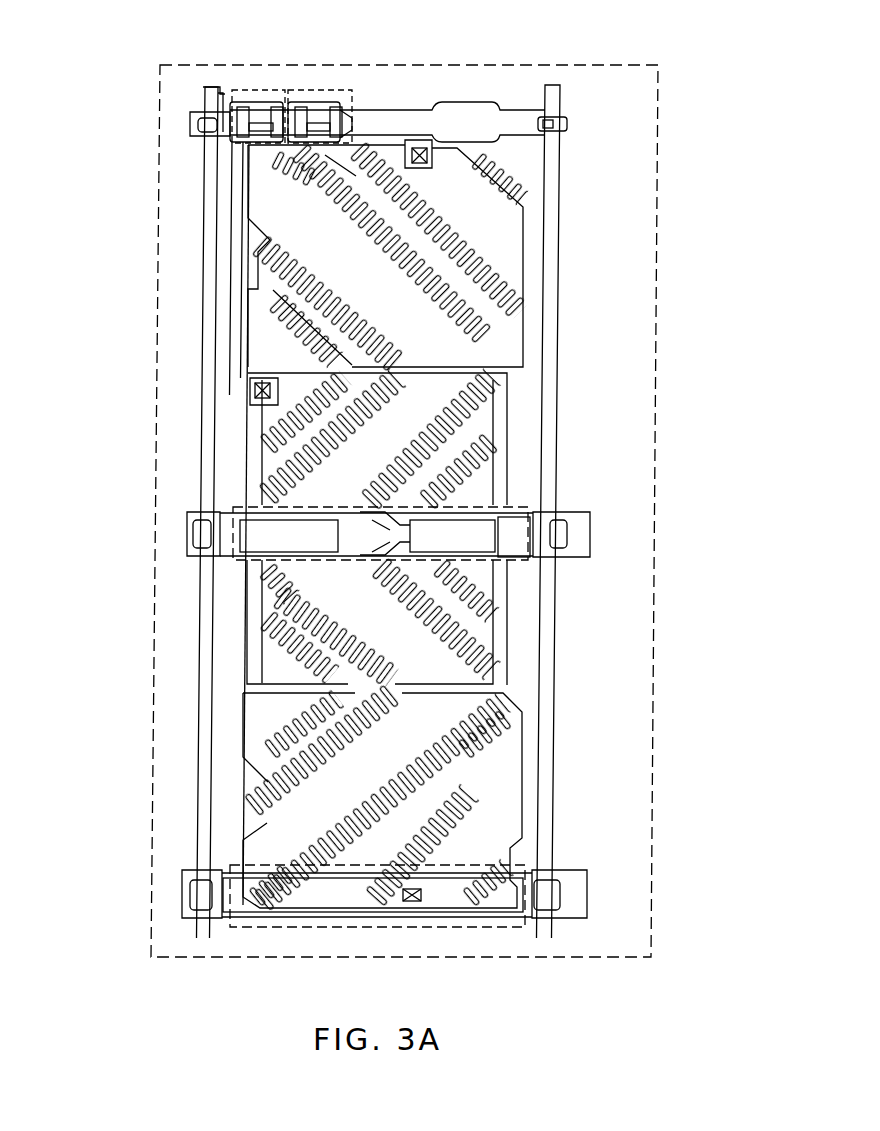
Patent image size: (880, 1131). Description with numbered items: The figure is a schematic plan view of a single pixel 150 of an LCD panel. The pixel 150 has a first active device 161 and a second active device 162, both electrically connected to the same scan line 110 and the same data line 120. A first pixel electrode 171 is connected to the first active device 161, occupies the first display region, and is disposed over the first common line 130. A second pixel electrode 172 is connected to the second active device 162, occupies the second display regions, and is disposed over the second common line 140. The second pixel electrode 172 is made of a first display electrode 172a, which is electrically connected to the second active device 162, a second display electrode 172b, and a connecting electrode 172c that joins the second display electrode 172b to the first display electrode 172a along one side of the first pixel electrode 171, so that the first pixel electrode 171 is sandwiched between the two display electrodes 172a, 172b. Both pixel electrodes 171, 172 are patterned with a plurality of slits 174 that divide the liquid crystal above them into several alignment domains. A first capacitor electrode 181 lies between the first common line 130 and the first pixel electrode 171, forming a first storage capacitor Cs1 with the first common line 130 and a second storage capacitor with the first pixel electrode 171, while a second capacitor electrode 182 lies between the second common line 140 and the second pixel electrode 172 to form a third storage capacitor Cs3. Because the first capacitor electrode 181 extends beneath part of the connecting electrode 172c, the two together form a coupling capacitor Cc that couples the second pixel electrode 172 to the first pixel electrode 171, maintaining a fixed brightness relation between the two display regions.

The scan line 110 is at (520, 124).
The data line 120 is at (212, 87).
The first common line 130 is at (185, 543).
The second common line 140 is at (183, 905).
The pixel 150 is at (665, 131).
The first active device 161 is at (257, 90).
The second active device 162 is at (310, 90).
The first pixel electrode 171 is at (258, 415).
The second pixel electrode 172 is at (461, 527).
The first display electrode 172a is at (411, 256).
The second display electrode 172b is at (489, 750).
The connecting electrode 172c is at (512, 452).
The slits 174 is at (283, 292).
The first capacitor electrode 181 is at (250, 565).
The second capacitor electrode 182 is at (508, 905).
The coupling capacitor Cc is at (528, 503).
The first storage capacitor Cs1 is at (305, 615).
The third storage capacitor Cs3 is at (525, 860).